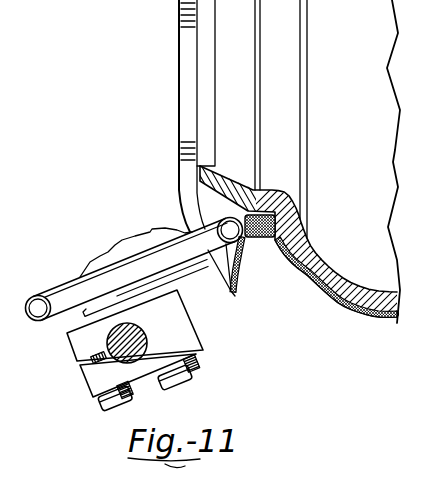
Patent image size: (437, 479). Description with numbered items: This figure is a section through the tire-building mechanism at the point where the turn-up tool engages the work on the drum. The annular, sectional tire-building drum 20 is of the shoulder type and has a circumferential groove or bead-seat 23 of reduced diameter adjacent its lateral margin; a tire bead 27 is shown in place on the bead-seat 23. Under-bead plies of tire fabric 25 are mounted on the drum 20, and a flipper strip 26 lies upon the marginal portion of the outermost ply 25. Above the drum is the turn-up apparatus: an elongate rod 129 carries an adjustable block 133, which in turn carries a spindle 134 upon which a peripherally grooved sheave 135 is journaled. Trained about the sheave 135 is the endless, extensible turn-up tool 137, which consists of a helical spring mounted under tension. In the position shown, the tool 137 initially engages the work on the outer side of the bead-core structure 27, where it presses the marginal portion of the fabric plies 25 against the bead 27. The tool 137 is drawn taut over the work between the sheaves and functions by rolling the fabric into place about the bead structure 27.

The tire-building form or drum 20 is at (278, 170).
The bead-seat 23 is at (273, 240).
The under-bead ply of tire fabric 25 is at (381, 324).
The flipper strip 26 is at (231, 283).
The tire bead 27 is at (258, 241).
The rod 129 is at (110, 362).
The block 133 is at (185, 334).
The spindle 134 is at (195, 383).
The sheave 135 is at (63, 290).
The turn-up tool 137 is at (32, 323).